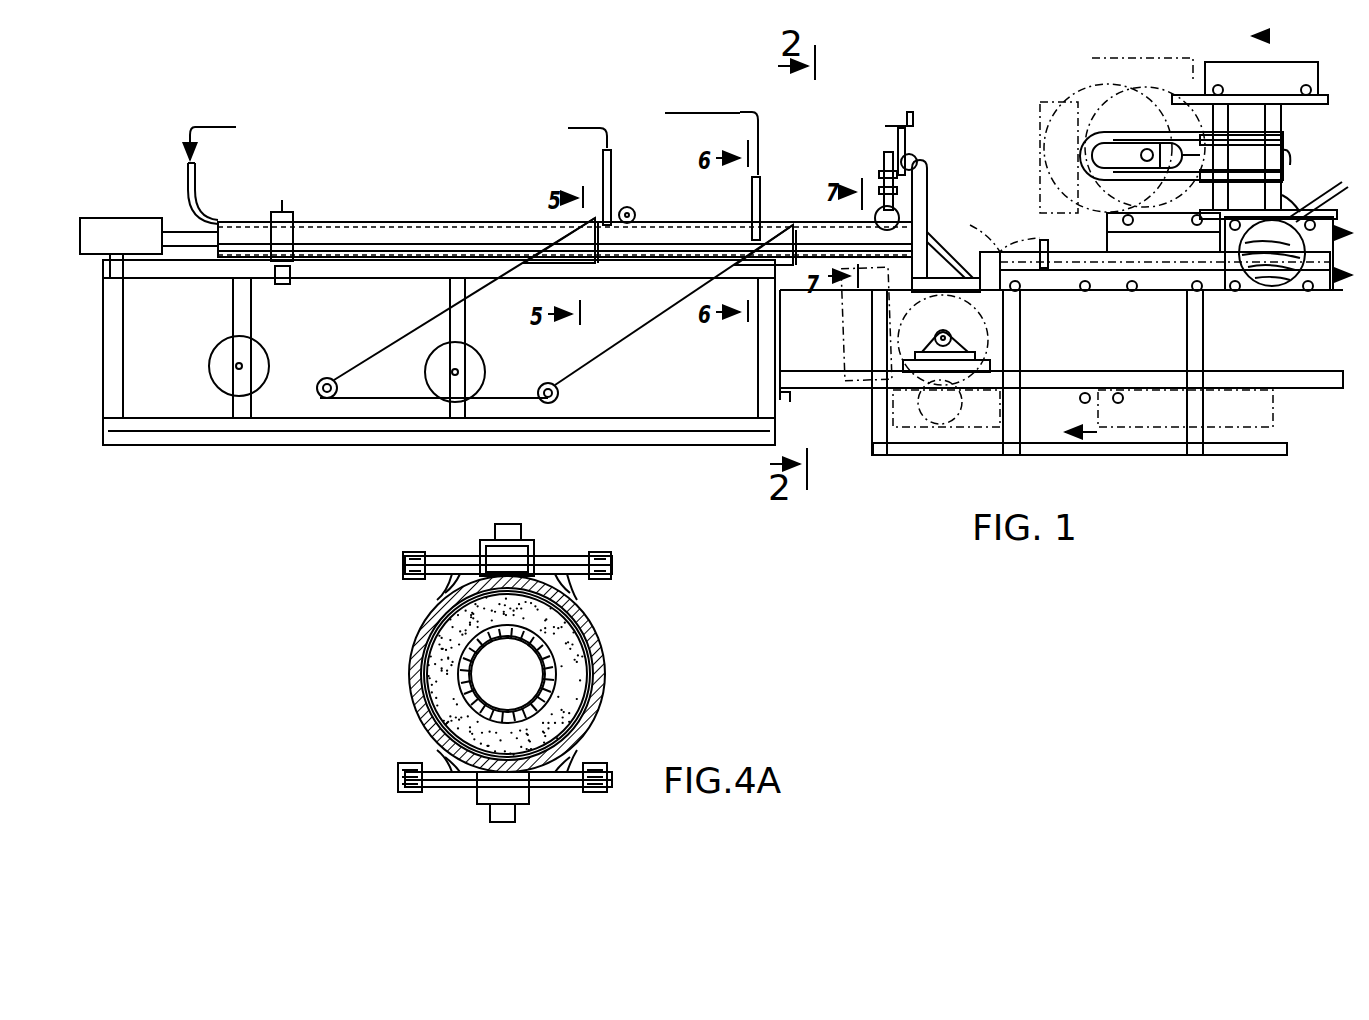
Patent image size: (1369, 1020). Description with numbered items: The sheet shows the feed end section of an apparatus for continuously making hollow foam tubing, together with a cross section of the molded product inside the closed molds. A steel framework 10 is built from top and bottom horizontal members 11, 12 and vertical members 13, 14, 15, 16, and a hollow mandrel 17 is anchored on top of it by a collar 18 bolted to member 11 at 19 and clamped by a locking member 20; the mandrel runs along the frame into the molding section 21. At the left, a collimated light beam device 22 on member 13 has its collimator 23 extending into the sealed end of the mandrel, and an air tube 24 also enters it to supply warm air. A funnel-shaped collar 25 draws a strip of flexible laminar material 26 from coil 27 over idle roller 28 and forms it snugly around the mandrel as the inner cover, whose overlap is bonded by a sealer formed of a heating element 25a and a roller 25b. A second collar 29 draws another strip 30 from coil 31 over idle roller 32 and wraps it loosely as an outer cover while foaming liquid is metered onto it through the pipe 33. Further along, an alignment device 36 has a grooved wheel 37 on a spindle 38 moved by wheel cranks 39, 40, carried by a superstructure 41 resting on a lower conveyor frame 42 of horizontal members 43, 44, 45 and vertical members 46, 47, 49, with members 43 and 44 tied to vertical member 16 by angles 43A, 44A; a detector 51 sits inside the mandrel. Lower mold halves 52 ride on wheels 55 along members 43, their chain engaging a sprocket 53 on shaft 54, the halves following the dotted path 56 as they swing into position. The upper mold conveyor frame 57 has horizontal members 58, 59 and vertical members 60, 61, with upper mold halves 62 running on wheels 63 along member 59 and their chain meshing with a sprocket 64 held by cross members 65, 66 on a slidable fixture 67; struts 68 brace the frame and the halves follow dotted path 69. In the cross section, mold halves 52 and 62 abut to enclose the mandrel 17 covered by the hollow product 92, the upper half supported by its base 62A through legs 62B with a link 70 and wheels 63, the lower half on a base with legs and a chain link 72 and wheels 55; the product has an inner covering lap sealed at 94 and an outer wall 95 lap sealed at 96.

In FIG. 1, the steel framework 10 is at (108, 350).
In FIG. 1, the top horizontal member 11 is at (222, 278).
In FIG. 1, the bottom horizontal member 12 is at (148, 420).
In FIG. 1, the vertical member 13 is at (120, 362).
In FIG. 1, the vertical member 14 is at (253, 319).
In FIG. 1, the vertical member 15 is at (466, 323).
In FIG. 1, the vertical member 16 is at (758, 349).
In FIG. 1, the hollow mandrel 17 is at (432, 222).
In FIG. 4A, the hollow mandrel 17 is at (540, 672).
In FIG. 1, the collar 18 is at (293, 217).
In FIG. 1, the bolted connection 19 is at (288, 284).
In FIG. 1, the locking member 20 is at (282, 200).
In FIG. 1, the molding section 21 is at (1000, 185).
In FIG. 1, the collimated light beam device 22 is at (127, 198).
In FIG. 1, the collimator 23 is at (180, 230).
In FIG. 1, the air tube 24 is at (196, 189).
In FIG. 1, the funnel-shaped collar 25 is at (590, 226).
In FIG. 1, the heating element 25a is at (612, 187).
In FIG. 1, the roller 25b is at (633, 210).
In FIG. 1, the flexible laminar material strip 26 is at (445, 333).
In FIG. 1, the coil 27 is at (262, 362).
In FIG. 1, the idle roller 28 is at (358, 362).
In FIG. 1, the funnel-shaped collar 29 is at (790, 226).
In FIG. 1, the flexible laminar material strip 30 is at (650, 336).
In FIG. 1, the coil 31 is at (480, 362).
In FIG. 1, the idle roller 32 is at (583, 364).
In FIG. 1, the pipe or hose 33 is at (752, 207).
In FIG. 1, the alignment device 36 is at (925, 128).
In FIG. 1, the grooved wheel 37 is at (874, 221).
In FIG. 1, the spindle 38 is at (879, 179).
In FIG. 1, the actuating wheel crank 39 is at (885, 128).
In FIG. 1, the wheel crank 40 is at (915, 161).
In FIG. 1, the superstructure 41 is at (928, 199).
In FIG. 1, the lower conveyor frame 42 is at (1320, 347).
In FIG. 1, the horizontal member 43 is at (1070, 298).
In FIG. 1, the angle 43A is at (824, 345).
In FIG. 1, the horizontal member 44 is at (1118, 372).
In FIG. 1, the angle 44A is at (790, 400).
In FIG. 1, the horizontal member 45 is at (1108, 460).
In FIG. 1, the vertical member 46 is at (873, 432).
In FIG. 1, the vertical member 47 is at (1020, 359).
In FIG. 1, the post 49 is at (1203, 363).
In FIG. 1, the detector 51 is at (1005, 247).
In FIG. 1, the lower mold half 52 is at (1300, 295).
In FIG. 4A, the lower mold half 52 is at (605, 696).
In FIG. 1, the sprocket 53 is at (958, 328).
In FIG. 1, the shaft 54 is at (952, 337).
In FIG. 1, the wheels 55 is at (1090, 298).
In FIG. 4A, the wheels 55 is at (400, 793).
In FIG. 1, the dotted line path 56 is at (945, 445).
In FIG. 1, the upper mold conveyor frame 57 is at (1300, 145).
In FIG. 1, the horizontal member 58 is at (1265, 203).
In FIG. 1, the horizontal member 59 is at (1310, 108).
In FIG. 1, the vertical member 60 is at (1228, 119).
In FIG. 1, the vertical member 61 is at (1283, 126).
In FIG. 1, the upper mold half 62 is at (1170, 80).
In FIG. 4A, the upper mold half 62 is at (605, 661).
In FIG. 4A, the base 62A is at (443, 556).
In FIG. 4A, the legs 62B is at (445, 596).
In FIG. 1, the wheels 63 is at (1233, 57).
In FIG. 4A, the wheels 63 is at (410, 552).
In FIG. 1, the sprocket 64 is at (1165, 134).
In FIG. 1, the cross member 65 is at (1283, 161).
In FIG. 1, the cross member 66 is at (1283, 183).
In FIG. 1, the slidable fixture 67 is at (1160, 170).
In FIG. 1, the strut 68 is at (1342, 186).
In FIG. 1, the dotted line path 69 is at (1085, 97).
In FIG. 4A, the link 70 is at (508, 524).
In FIG. 4A, the chain link 72 is at (478, 806).
In FIG. 4A, the hollow product 92 is at (440, 666).
In FIG. 4A, the lap seal 94 is at (555, 629).
In FIG. 4A, the outer wall 95 is at (432, 646).
In FIG. 4A, the lap seal 96 is at (540, 560).